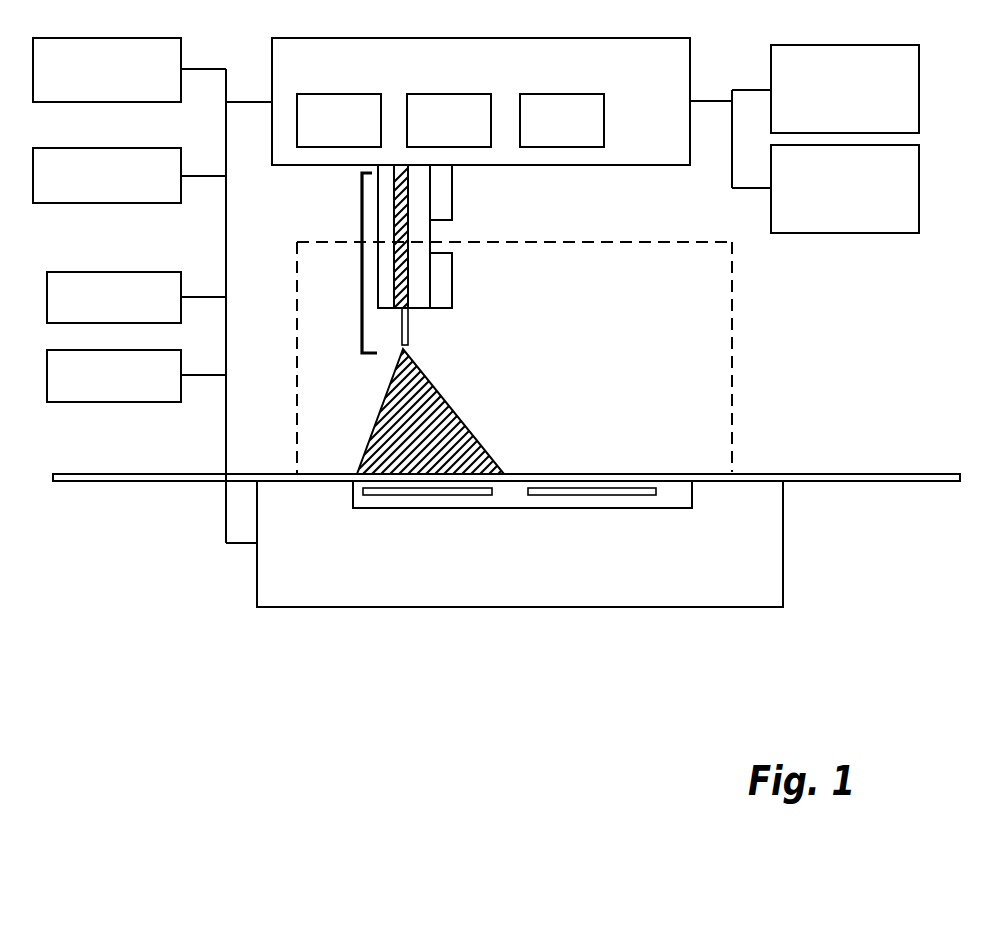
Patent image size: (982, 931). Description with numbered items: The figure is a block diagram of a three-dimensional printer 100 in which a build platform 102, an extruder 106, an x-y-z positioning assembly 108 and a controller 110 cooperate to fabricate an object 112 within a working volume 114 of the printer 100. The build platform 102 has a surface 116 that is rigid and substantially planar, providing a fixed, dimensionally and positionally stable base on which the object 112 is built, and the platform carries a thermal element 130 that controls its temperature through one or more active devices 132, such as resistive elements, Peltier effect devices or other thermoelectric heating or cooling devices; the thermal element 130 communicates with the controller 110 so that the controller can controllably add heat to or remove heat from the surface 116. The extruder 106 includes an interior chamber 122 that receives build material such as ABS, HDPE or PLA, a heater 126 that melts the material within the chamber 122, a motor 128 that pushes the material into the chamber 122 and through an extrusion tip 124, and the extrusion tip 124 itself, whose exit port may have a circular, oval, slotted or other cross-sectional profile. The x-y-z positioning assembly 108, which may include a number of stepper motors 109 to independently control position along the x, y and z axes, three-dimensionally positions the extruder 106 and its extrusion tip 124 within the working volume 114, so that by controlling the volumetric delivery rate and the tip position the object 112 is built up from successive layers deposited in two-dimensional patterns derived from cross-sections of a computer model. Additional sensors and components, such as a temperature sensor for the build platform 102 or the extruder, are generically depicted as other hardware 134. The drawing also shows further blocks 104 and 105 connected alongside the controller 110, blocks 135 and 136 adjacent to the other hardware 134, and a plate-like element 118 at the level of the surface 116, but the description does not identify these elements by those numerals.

The printer 100 is at (904, 336).
The build platform 102 is at (730, 597).
The processor 104 is at (96, 313).
The memory 105 is at (96, 391).
The extruder 106 is at (362, 223).
The x-y-z positioning assembly 108 is at (309, 85).
The stepper motors 109 is at (321, 133).
The controller 110 is at (89, 190).
The object 112 is at (448, 400).
The working volume 114 is at (733, 356).
The surface 116 is at (332, 486).
The sample plate 118 is at (816, 472).
The chamber 122 is at (384, 267).
The extrusion tip 124 is at (402, 329).
The heater 126 is at (452, 279).
The motor 128 is at (452, 192).
The thermal element 130 is at (485, 508).
The active devices 132 is at (610, 498).
The other hardware 134 is at (827, 112).
The user interface 135 is at (827, 198).
The communication interface 136 is at (89, 84).